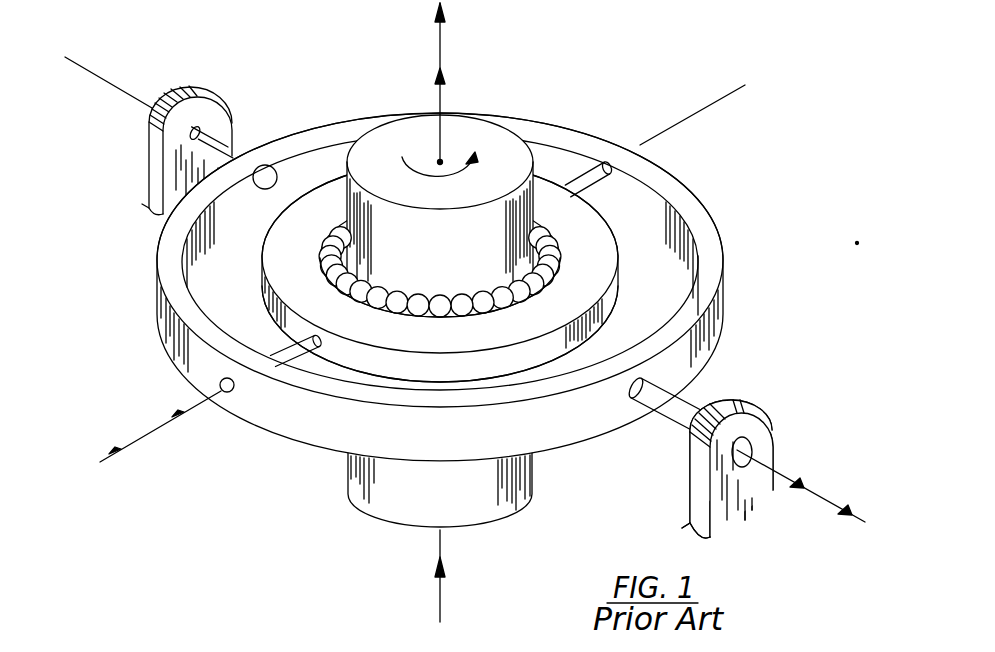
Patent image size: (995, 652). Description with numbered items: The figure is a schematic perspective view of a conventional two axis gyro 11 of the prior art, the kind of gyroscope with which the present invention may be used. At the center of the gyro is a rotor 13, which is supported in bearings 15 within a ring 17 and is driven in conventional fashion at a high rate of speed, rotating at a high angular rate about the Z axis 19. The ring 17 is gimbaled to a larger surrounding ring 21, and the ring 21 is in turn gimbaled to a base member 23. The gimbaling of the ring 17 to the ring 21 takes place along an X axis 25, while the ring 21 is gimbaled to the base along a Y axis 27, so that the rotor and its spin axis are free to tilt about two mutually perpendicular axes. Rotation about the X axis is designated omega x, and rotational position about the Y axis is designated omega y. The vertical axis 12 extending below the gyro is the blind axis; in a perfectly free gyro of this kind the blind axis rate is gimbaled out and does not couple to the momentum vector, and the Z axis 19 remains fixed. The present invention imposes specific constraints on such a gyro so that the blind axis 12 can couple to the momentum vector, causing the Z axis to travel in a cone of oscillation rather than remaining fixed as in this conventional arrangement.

The two axis gyro 11 is at (608, 95).
The blind axis 12 is at (440, 600).
The rotor 13 is at (473, 125).
The bearings 15 is at (549, 228).
The ring 17 is at (567, 190).
The Z axis 19 is at (440, 52).
The ring 21 is at (673, 182).
The base member 23 is at (196, 86).
The X axis 25 is at (145, 437).
The Y axis 27 is at (785, 476).